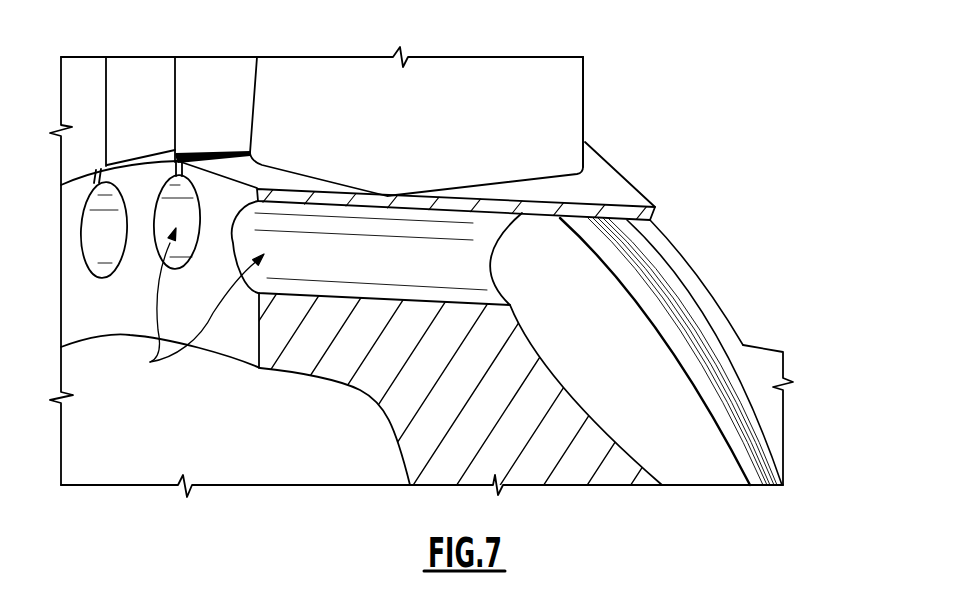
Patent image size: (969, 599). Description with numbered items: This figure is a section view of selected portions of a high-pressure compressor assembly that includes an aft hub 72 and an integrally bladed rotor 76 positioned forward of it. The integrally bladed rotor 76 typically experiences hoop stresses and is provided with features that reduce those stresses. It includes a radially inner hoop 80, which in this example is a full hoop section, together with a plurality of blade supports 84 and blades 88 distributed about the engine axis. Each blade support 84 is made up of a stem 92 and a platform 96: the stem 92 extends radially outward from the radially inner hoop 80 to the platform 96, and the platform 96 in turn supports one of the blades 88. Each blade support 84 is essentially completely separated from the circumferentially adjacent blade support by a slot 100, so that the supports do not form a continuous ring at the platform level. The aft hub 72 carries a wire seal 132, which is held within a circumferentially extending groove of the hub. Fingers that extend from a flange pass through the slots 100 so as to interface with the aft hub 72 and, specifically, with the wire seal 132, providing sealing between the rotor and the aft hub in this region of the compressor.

The aft hub 72 is at (673, 263).
The integrally bladed rotor 76 is at (585, 93).
The radially inner hoop 80 is at (237, 326).
The blade support 84 is at (236, 207).
The blade 88 is at (452, 88).
The stem 92 is at (460, 260).
The platform 96 is at (607, 188).
The slot 100 is at (150, 362).
The wire seal 132 is at (755, 433).